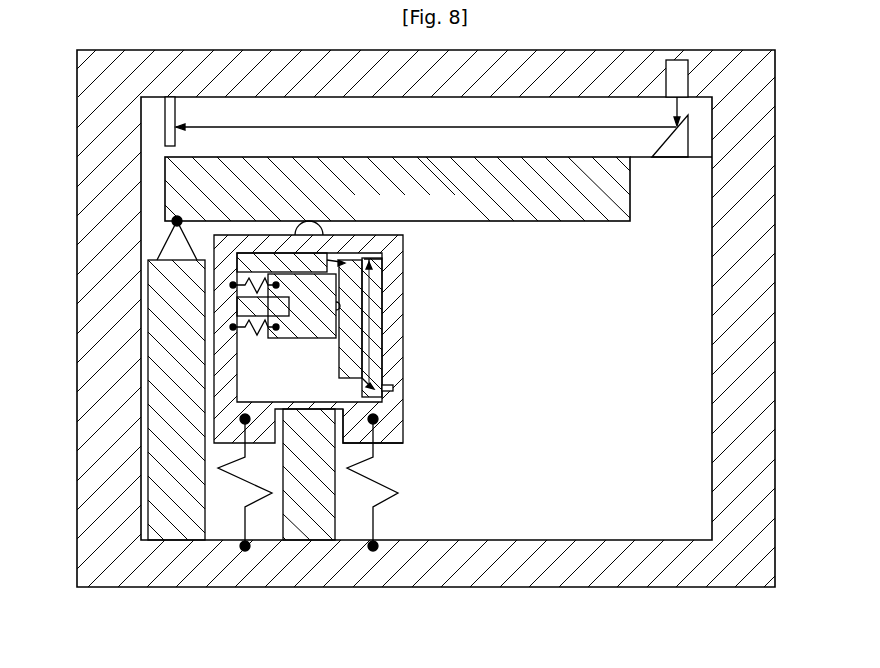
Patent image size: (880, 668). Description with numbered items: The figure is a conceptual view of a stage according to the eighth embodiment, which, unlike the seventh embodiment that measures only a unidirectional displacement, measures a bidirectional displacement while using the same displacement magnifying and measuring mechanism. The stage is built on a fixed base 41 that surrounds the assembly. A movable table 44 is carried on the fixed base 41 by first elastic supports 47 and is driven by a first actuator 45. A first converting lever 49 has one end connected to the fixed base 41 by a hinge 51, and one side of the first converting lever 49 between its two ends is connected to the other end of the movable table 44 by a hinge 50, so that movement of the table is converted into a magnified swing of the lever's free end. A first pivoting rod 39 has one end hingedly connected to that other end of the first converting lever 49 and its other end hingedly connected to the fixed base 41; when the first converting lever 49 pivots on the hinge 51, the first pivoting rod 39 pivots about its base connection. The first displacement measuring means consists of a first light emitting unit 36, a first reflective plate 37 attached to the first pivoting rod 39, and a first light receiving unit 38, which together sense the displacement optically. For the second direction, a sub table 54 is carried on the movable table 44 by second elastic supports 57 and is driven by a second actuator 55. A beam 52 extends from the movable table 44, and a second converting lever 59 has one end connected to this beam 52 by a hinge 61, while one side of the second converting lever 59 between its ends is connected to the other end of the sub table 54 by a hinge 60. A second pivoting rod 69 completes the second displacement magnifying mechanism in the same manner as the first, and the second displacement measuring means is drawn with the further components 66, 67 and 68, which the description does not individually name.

The first light emitting unit 36 is at (690, 72).
The first reflective plate 37 is at (675, 147).
The first light receiving unit 38 is at (170, 120).
The first pivoting rod 39 is at (638, 160).
The fixed base 41 is at (753, 247).
The movable table 44 is at (397, 427).
The first actuator 45 is at (308, 522).
The first elastic supports 47 is at (248, 523).
The first converting lever 49 is at (597, 207).
The hinge 50 is at (308, 226).
The hinge 51 is at (175, 219).
The beam 52 is at (160, 480).
The sub table 54 is at (300, 330).
The second actuator 55 is at (248, 307).
The second elastic supports 57 is at (258, 322).
The second converting lever 59 is at (375, 340).
The hinge 60 is at (350, 337).
The hinge 61 is at (378, 278).
The tab 66 is at (390, 388).
The arrow indicator 67 is at (367, 380).
The top bar 68 is at (378, 262).
The second pivoting rod 69 is at (398, 405).